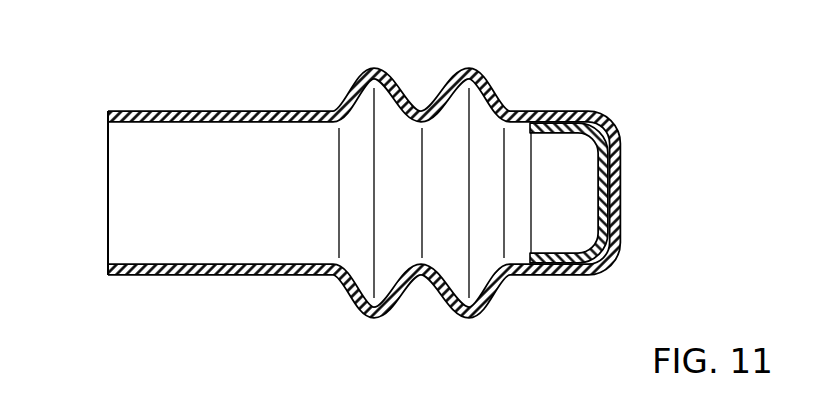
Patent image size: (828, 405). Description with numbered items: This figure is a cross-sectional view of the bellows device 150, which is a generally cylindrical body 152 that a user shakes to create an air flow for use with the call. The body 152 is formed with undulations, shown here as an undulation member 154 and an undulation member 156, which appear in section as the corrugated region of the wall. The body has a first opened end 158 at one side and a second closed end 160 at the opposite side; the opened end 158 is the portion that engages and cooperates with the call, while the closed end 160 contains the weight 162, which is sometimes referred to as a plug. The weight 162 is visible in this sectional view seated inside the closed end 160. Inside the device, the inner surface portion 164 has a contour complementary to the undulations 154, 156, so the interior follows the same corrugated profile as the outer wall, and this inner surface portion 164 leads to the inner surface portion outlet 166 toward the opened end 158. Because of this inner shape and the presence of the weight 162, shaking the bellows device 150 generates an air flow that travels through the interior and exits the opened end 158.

The bellows device 150 is at (159, 52).
The body 152 is at (558, 111).
The undulation member 154 is at (473, 66).
The undulation member 156 is at (376, 66).
The first opened end 158 is at (108, 118).
The second closed end 160 is at (620, 157).
The weight 162 is at (568, 252).
The inner surface portion 164 is at (358, 302).
The inner surface portion outlet 166 is at (155, 263).